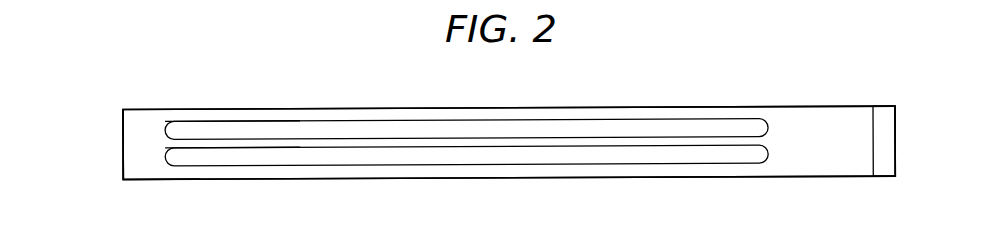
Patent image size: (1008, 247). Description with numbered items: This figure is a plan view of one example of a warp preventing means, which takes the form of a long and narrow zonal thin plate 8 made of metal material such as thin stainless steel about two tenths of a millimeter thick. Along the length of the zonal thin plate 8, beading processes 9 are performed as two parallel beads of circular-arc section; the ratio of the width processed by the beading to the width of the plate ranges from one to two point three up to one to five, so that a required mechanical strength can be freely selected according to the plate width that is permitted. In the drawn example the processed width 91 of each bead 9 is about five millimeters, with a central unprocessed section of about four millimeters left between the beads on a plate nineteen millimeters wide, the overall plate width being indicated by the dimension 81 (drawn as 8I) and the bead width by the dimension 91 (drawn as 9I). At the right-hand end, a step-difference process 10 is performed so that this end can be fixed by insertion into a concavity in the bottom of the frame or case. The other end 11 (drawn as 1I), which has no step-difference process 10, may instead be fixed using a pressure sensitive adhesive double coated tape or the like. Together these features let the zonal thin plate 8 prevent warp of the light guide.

The zonal thin plate 8 is at (825, 166).
The beading process 9 is at (357, 128).
The step-difference process 10 is at (873, 130).
The width of plate 8I is at (88, 178).
The width of plate 81 is at (466, 143).
The slot pitch 9I is at (226, 148).
The processed width 91 is at (232, 122).
The end of plate 1I is at (140, 169).
The other end 11 is at (162, 167).